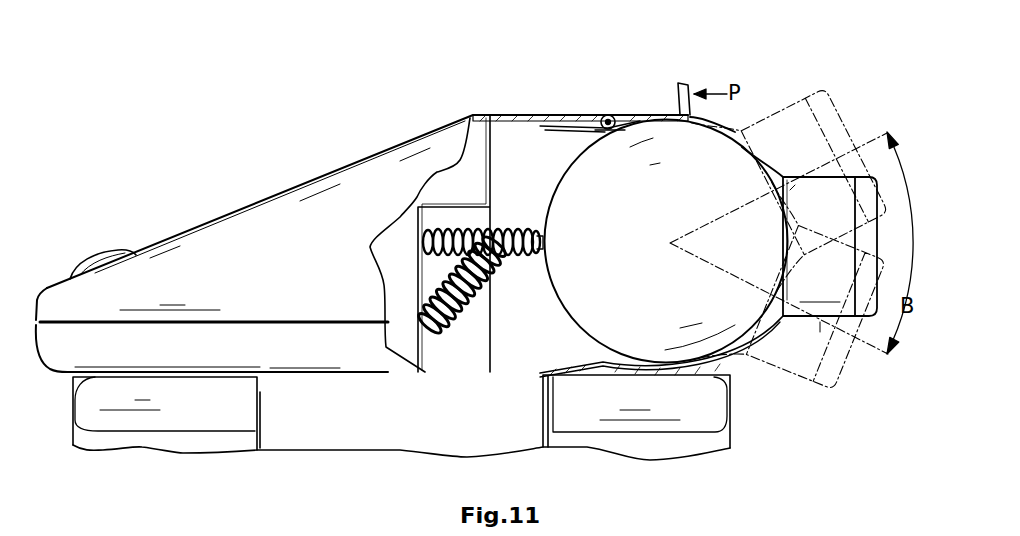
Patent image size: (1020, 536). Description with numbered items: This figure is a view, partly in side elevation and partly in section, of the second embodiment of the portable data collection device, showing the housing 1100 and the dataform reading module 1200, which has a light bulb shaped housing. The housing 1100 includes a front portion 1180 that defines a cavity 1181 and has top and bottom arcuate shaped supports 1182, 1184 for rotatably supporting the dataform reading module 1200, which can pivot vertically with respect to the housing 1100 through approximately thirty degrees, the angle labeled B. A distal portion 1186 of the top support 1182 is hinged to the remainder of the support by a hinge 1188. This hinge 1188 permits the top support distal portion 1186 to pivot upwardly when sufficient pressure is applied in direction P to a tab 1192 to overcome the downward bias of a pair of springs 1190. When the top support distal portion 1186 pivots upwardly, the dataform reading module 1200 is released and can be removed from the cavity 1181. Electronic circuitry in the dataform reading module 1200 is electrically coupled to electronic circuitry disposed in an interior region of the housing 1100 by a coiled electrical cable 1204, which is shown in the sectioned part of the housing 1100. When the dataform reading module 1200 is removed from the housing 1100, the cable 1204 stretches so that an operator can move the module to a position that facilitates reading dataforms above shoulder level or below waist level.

The housing 1100 is at (275, 190).
The front portion 1180 is at (603, 100).
The cavity 1181 is at (510, 195).
The top arcuate shaped support 1182 is at (623, 117).
The bottom arcuate shaped support 1184 is at (740, 363).
The distal portion of top support 1186 is at (733, 125).
The hinge 1188 is at (608, 133).
The springs 1190 is at (597, 117).
The tab 1192 is at (710, 67).
The dataform reading module 1200 is at (768, 342).
The coiled electrical cable 1204 is at (478, 317).